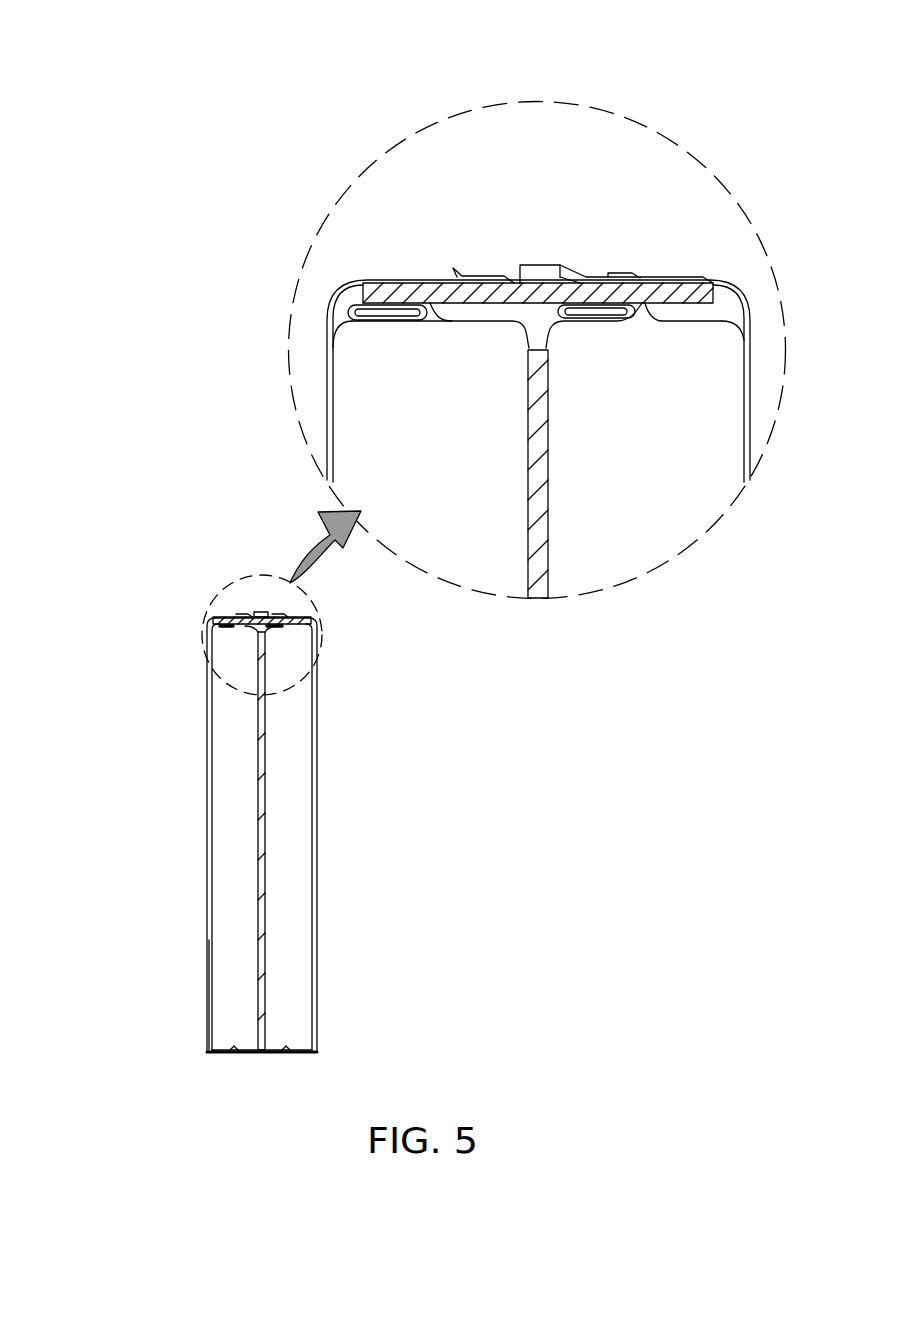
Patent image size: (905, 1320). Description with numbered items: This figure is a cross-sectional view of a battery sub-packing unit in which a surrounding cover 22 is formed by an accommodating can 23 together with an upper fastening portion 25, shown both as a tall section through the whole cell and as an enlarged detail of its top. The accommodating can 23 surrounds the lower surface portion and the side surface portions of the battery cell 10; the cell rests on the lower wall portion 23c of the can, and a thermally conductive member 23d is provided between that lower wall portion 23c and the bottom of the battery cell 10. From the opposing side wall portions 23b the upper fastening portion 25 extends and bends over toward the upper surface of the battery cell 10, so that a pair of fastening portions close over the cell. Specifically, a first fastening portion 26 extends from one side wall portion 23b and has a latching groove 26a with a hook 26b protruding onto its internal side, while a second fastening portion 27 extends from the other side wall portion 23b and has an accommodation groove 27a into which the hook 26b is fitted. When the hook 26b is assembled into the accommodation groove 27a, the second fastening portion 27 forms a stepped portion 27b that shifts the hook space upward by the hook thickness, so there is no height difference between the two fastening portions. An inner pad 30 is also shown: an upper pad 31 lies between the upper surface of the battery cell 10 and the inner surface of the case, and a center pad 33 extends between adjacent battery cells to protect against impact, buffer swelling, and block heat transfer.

The battery cell 10 is at (290, 820).
The surrounding cover 22 is at (95, 1100).
The accommodating can 23 is at (135, 960).
The side wall portion 23b is at (208, 945).
The lower wall portion 23c is at (222, 1055).
The thermally conductive member 23d is at (247, 1055).
The upper fastening portion 25 is at (728, 48).
The first fastening portion 26 is at (673, 282).
The latching groove 26a is at (560, 270).
The hook 26b is at (522, 266).
The second fastening portion 27 is at (403, 280).
The accommodation groove 27a is at (513, 280).
The stepped portion 27b is at (540, 268).
The inner pad 30 is at (683, 670).
The upper pad 31 is at (677, 290).
The center pad 33 is at (538, 598).